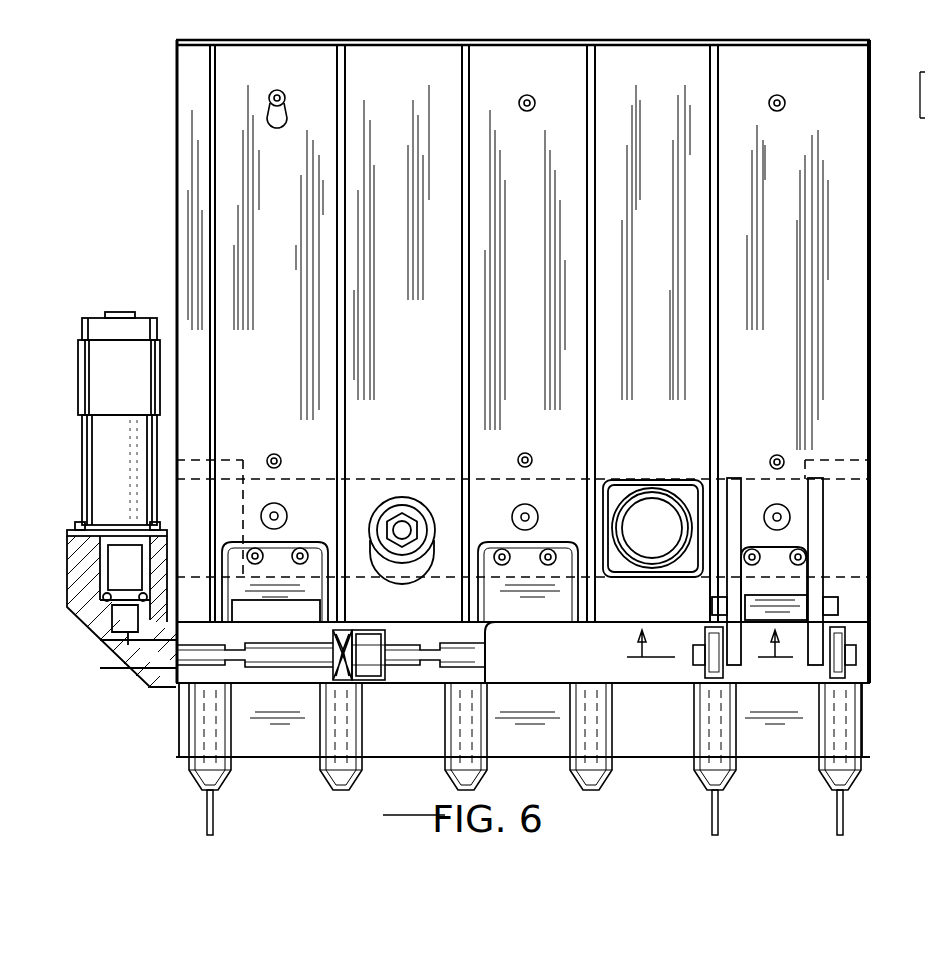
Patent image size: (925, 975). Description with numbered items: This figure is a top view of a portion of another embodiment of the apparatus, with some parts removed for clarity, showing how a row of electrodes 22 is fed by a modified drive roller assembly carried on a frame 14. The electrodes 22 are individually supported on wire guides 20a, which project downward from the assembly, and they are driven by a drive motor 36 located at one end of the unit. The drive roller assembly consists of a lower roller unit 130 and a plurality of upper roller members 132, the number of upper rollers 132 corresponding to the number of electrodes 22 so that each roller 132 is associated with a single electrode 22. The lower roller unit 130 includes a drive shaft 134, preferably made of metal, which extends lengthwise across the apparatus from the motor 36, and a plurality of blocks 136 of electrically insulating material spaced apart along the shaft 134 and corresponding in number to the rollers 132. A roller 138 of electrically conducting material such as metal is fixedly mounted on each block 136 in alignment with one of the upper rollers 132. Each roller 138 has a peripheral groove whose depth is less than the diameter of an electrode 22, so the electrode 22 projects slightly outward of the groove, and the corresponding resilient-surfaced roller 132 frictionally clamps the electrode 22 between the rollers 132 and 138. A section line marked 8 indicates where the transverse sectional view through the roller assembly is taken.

The frame / mounting panel 14 is at (871, 266).
The drive motor 36 is at (126, 459).
The lower roller unit 130 is at (205, 688).
The upper roller members 132 is at (712, 670).
The drive shaft 134 is at (291, 652).
The blocks 136 is at (365, 640).
The roller 138 is at (330, 665).
The wire guides 20a is at (222, 727).
The electrodes 22 is at (205, 805).
The section line for FIG. 8 is at (710, 640).